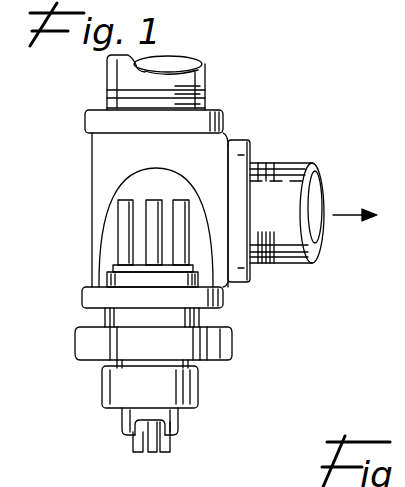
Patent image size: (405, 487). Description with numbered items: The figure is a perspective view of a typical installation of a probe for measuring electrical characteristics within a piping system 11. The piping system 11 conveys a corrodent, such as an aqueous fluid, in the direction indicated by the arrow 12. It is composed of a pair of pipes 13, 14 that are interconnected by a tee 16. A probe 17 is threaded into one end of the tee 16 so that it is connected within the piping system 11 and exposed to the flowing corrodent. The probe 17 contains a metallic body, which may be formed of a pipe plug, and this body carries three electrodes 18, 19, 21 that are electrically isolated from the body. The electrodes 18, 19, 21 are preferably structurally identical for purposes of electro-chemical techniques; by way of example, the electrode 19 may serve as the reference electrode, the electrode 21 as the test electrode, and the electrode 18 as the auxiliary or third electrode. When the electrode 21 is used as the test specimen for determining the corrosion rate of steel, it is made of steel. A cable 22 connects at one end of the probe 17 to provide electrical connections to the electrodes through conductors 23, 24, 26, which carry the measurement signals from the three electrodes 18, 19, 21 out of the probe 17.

The piping system 11 is at (184, 161).
The arrow 12 is at (360, 218).
The pipe 13 is at (207, 77).
The pipe 14 is at (281, 162).
The tee 16 is at (92, 163).
The probe 17 is at (206, 319).
The electrode 18 is at (118, 231).
The electrode 19 is at (177, 200).
The electrode 21 is at (155, 200).
The cable 22 is at (183, 420).
The conductor 23 is at (131, 446).
The conductor 24 is at (170, 450).
The conductor 26 is at (152, 454).